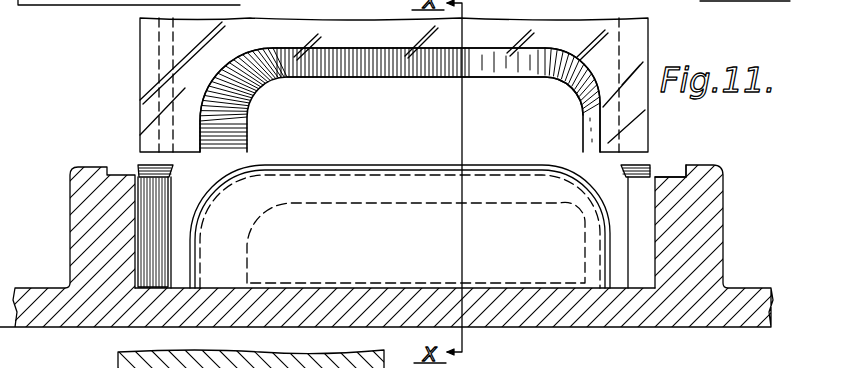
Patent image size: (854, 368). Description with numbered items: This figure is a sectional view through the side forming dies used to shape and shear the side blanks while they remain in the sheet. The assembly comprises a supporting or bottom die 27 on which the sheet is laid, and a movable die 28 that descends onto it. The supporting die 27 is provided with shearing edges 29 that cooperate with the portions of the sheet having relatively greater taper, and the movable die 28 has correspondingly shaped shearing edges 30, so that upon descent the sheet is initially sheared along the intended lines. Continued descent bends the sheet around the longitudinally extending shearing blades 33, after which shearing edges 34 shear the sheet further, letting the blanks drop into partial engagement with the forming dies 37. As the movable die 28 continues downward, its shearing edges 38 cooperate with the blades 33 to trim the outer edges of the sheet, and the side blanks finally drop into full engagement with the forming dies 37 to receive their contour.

The supporting or bottom die 27 is at (700, 235).
The movable die 28 is at (141, 50).
The shearing edges 29 is at (640, 177).
The shearing edges 30 is at (141, 153).
The shearing blades 33 is at (210, 238).
The shearing edges 34 is at (514, 82).
The forming dies 37 is at (225, 200).
The shearing edges 38 is at (338, 52).